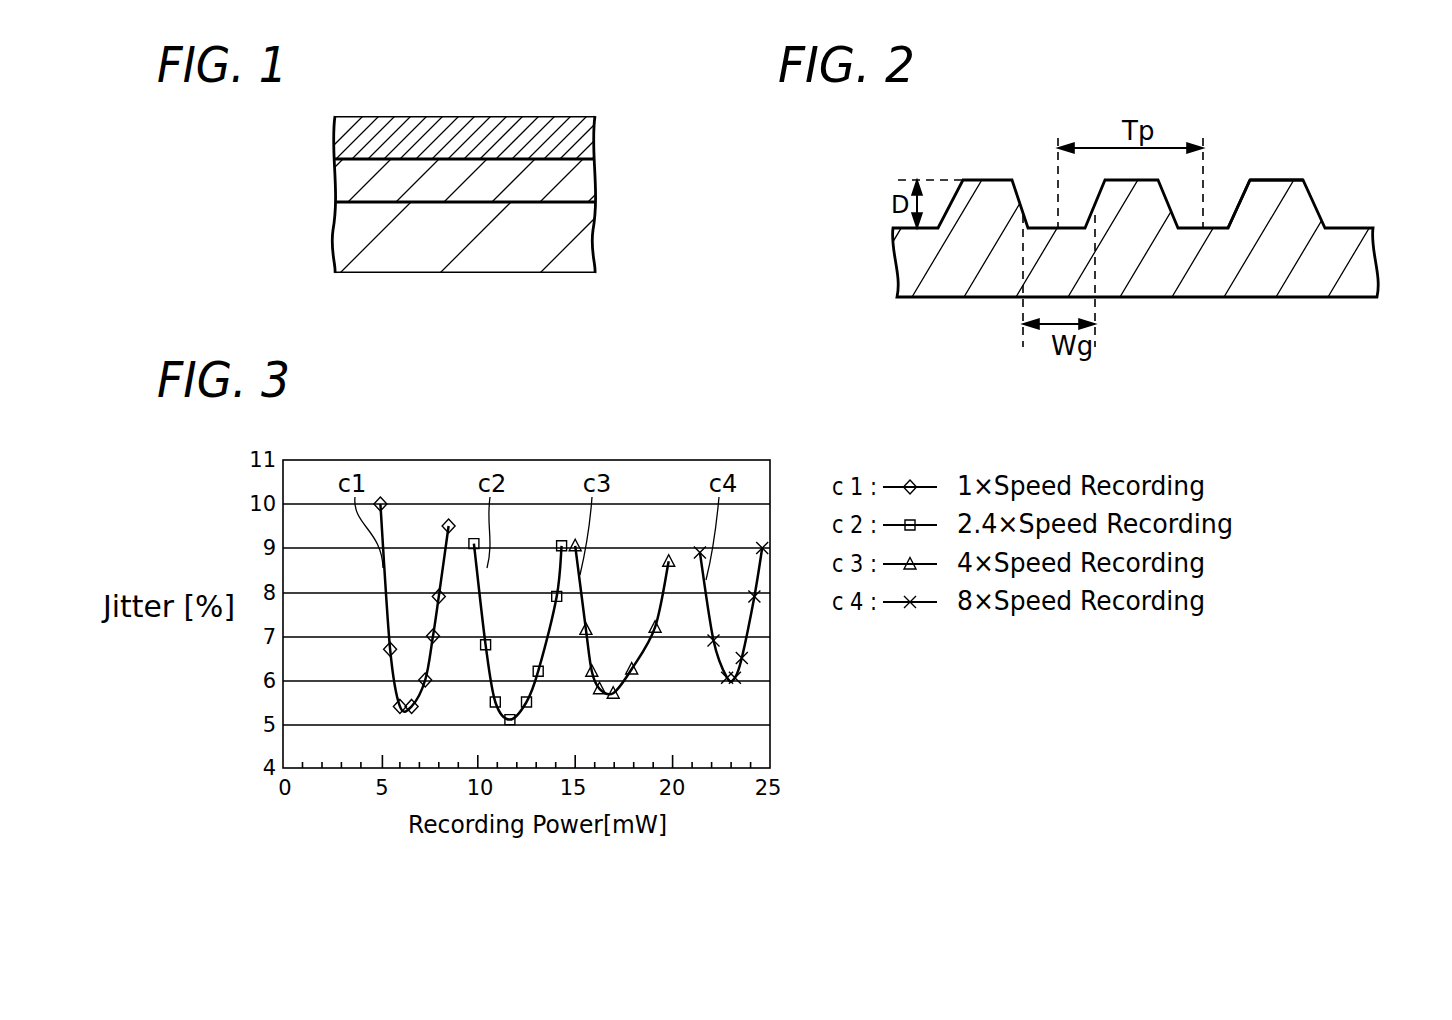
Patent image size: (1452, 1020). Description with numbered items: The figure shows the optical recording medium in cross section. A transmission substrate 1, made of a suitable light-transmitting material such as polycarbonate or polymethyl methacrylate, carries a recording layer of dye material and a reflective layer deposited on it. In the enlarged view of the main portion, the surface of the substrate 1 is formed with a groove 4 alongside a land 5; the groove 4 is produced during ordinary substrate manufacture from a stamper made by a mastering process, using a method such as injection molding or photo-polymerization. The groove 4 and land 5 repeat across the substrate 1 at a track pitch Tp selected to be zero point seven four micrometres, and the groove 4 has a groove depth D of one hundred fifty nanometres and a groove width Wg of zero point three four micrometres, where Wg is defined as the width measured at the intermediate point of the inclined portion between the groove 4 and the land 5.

The transmission substrate 1 is at (1360, 270).
The groove 4 is at (1238, 195).
The land 5 is at (1292, 168).